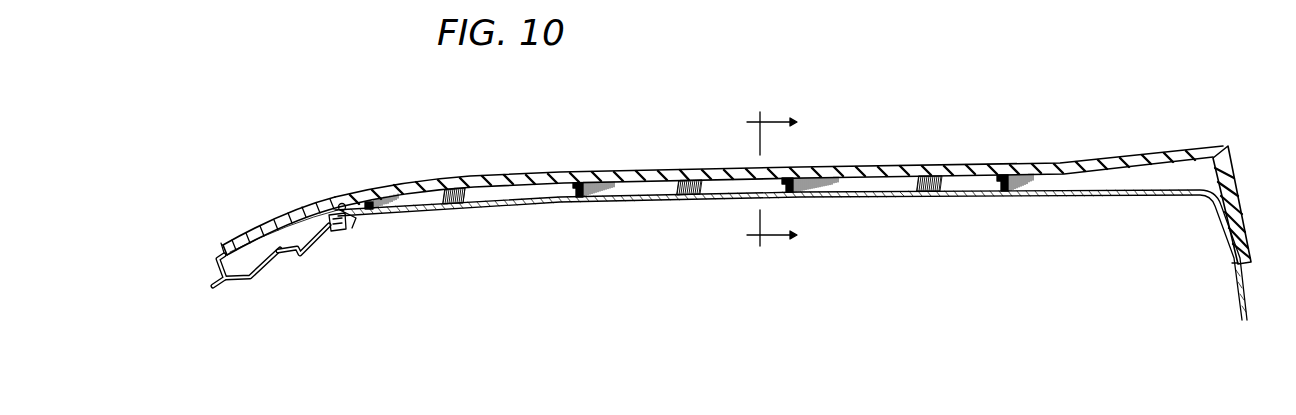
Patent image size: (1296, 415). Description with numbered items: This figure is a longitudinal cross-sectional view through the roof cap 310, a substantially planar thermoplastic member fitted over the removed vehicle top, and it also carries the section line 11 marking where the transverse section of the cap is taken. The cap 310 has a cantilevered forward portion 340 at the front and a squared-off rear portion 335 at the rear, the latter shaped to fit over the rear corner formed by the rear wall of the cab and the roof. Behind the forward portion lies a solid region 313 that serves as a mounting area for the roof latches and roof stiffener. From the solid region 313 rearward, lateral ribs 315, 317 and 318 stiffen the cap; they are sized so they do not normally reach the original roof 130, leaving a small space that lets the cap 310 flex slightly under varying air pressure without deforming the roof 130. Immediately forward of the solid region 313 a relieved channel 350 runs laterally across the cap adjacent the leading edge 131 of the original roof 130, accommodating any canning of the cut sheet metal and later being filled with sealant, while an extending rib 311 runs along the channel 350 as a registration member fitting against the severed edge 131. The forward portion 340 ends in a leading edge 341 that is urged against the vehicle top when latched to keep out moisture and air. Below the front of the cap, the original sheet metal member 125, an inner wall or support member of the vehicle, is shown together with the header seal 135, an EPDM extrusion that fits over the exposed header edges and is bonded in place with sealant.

The section line 11— 11 is at (790, 178).
The sheet metal member 125 is at (253, 277).
The original roof 130 is at (543, 207).
The leading edge 131 is at (352, 220).
The header seal 135 is at (313, 247).
The roof cap 310 is at (437, 177).
The extending rib 311 is at (340, 222).
The solid region 313 is at (387, 208).
The lateral rib 315 is at (577, 200).
The lateral rib 317 is at (793, 197).
The lateral rib 318 is at (1010, 193).
The rear portion 335 is at (1230, 162).
The cantilevered forward portion 340 is at (308, 200).
The leading edge 341 is at (227, 240).
The relieved channel 350 is at (343, 207).